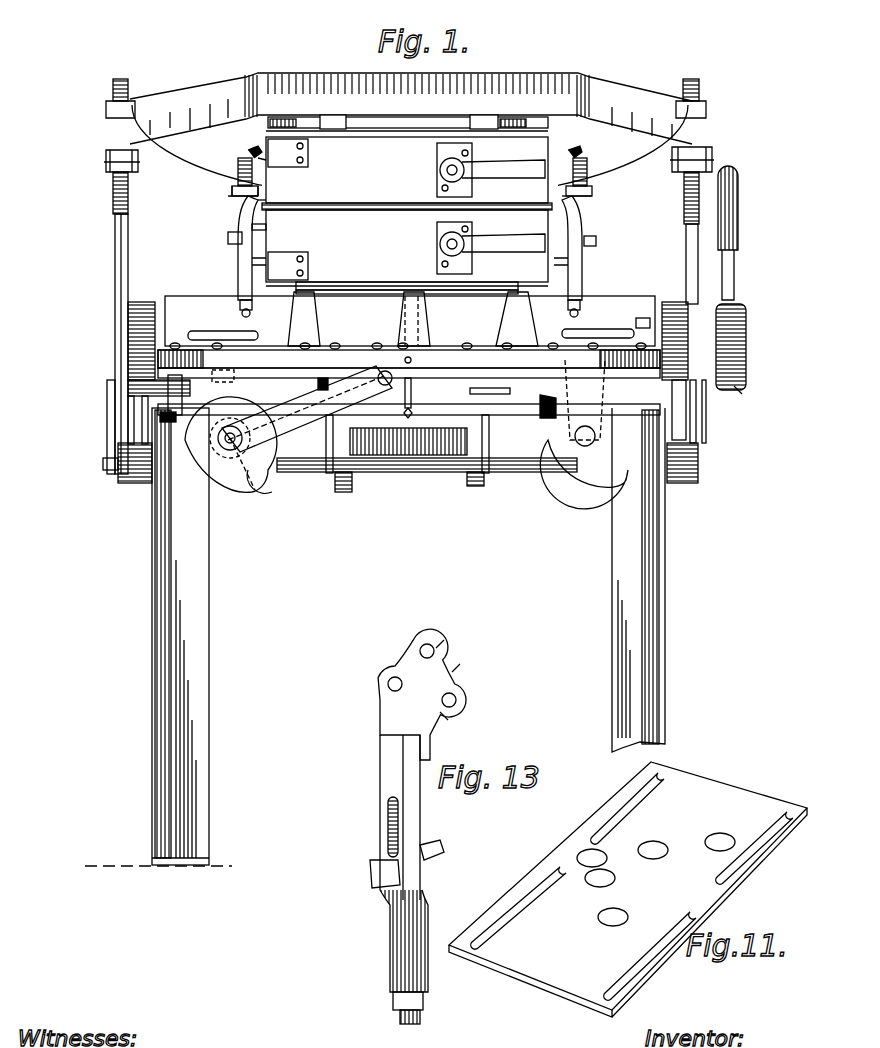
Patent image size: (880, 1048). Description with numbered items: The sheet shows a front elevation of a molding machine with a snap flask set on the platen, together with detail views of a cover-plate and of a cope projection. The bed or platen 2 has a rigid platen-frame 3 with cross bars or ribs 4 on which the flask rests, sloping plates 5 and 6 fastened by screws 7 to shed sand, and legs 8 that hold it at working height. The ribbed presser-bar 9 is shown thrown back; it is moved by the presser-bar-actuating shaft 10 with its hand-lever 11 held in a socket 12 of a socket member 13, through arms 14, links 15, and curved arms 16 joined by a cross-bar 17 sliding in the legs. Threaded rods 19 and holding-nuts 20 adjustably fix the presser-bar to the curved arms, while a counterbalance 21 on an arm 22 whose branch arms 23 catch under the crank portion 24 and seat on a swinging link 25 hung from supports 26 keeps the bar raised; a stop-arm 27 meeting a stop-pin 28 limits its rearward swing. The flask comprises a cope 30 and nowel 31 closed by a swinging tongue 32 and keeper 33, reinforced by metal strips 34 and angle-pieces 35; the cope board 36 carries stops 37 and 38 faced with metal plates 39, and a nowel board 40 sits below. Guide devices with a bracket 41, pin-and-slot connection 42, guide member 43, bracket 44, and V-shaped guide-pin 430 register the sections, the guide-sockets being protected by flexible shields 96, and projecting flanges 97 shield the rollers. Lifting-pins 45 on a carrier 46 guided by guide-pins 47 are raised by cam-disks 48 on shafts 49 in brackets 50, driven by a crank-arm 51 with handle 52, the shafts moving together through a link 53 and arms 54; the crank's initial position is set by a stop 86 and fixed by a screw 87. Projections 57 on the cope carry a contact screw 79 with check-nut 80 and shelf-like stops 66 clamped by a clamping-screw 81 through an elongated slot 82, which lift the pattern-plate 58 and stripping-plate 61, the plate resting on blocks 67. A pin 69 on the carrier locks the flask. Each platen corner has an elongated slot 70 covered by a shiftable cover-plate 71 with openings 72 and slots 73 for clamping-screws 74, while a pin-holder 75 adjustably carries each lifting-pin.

In FIG. 1, the bed or platen 2 is at (348, 372).
In FIG. 1, the platen-frame 3 is at (450, 370).
In FIG. 1, the cross bars or ribs 4 is at (413, 319).
In FIG. 1, the sloping plate 5 is at (166, 310).
In FIG. 1, the sloping plate 6 is at (320, 316).
In FIG. 1, the screws 7 is at (296, 348).
In FIG. 1, the legs 8 is at (408, 636).
In FIG. 1, the presser-bar 9 is at (411, 108).
In FIG. 1, the presser-bar-actuating shaft 10 is at (746, 344).
In FIG. 1, the hand-lever 11 is at (738, 222).
In FIG. 1, the socket 12 is at (746, 372).
In FIG. 1, the socket member 13 is at (742, 394).
In FIG. 1, the arms 14 is at (128, 320).
In FIG. 1, the links 15 is at (115, 236).
In FIG. 1, the curved arm 16 is at (128, 388).
In FIG. 1, the cross-bar 17 is at (548, 470).
In FIG. 1, the threaded rod 19 is at (118, 83).
In FIG. 1, the holding-nuts 20 is at (108, 110).
In FIG. 1, the counterbalance 21 is at (440, 296).
In FIG. 1, the arm 22 is at (396, 456).
In FIG. 1, the branch arms 23 is at (344, 493).
In FIG. 1, the crank portion 24 is at (444, 473).
In FIG. 1, the swinging link 25 is at (328, 460).
In FIG. 1, the supports 26 is at (318, 380).
In FIG. 1, the stop-arm 27 is at (107, 414).
In FIG. 1, the stop-pin 28 is at (106, 466).
In FIG. 1, the cope 30 is at (407, 170).
In FIG. 1, the nowel 31 is at (407, 246).
In FIG. 1, the swinging tongue 32 is at (503, 172).
In FIG. 1, the keeper 33 is at (542, 233).
In FIG. 1, the metal strips 34 is at (372, 200).
In FIG. 1, the angle-pieces 35 is at (288, 209).
In FIG. 1, the cope board 36 is at (376, 178).
In FIG. 1, the projecting stop 37 is at (272, 122).
In FIG. 1, the projecting stop 38 is at (336, 115).
In FIG. 1, the metal plates 39 is at (324, 125).
In FIG. 1, the nowel board 40 is at (432, 285).
In FIG. 1, the bracket 41 is at (236, 197).
In FIG. 1, the pin-and-slot connection 42 is at (236, 188).
In FIG. 1, the guide member 43 is at (238, 166).
In FIG. 1, the bracket 44 is at (256, 260).
In FIG. 1, the lifting-pins 45 is at (240, 332).
In FIG. 1, the carrier 46 is at (162, 418).
In FIG. 1, the guide-pins 47 is at (180, 384).
In FIG. 1, the cam-disk 48 is at (236, 488).
In FIG. 1, the shaft 49 is at (580, 442).
In FIG. 1, the brackets 50 is at (596, 400).
In FIG. 1, the crank-arm 51 is at (218, 439).
In FIG. 1, the handle 52 is at (385, 385).
In FIG. 1, the link 53 is at (540, 392).
In FIG. 1, the arm 54 is at (270, 485).
In FIG. 1, the projections 57 is at (238, 254).
In FIG. 13, the projections 57 is at (383, 766).
In FIG. 1, the pattern-plate 58 is at (400, 204).
In FIG. 1, the stripping-plate 61 is at (333, 224).
In FIG. 1, the stops 66 is at (266, 228).
In FIG. 13, the stops 66 is at (438, 848).
In FIG. 1, the block 67 is at (262, 202).
In FIG. 1, the pin 69 is at (426, 328).
In FIG. 1, the elongated slot 70 is at (193, 330).
In FIG. 11, the cover-plate 71 is at (628, 889).
In FIG. 11, the openings 72 is at (650, 860).
In FIG. 11, the slots 73 is at (590, 830).
In FIG. 1, the clamping-screws 74 is at (642, 328).
In FIG. 1, the pin-holder 75 is at (276, 400).
In FIG. 1, the screw 79 is at (243, 300).
In FIG. 13, the screw 79 is at (400, 1014).
In FIG. 1, the check-nut 80 is at (260, 310).
In FIG. 13, the check-nut 80 is at (393, 998).
In FIG. 1, the clamping-screw 81 is at (232, 236).
In FIG. 13, the clamping-screw 81 is at (378, 878).
In FIG. 13, the elongated slot 82 is at (388, 824).
In FIG. 1, the stop 86 is at (414, 362).
In FIG. 1, the screw 87 is at (228, 444).
In FIG. 1, the flexible shields 96 is at (248, 154).
In FIG. 1, the projecting flanges 97 is at (178, 296).
In FIG. 1, the V-shaped guide-pin 430 is at (262, 158).